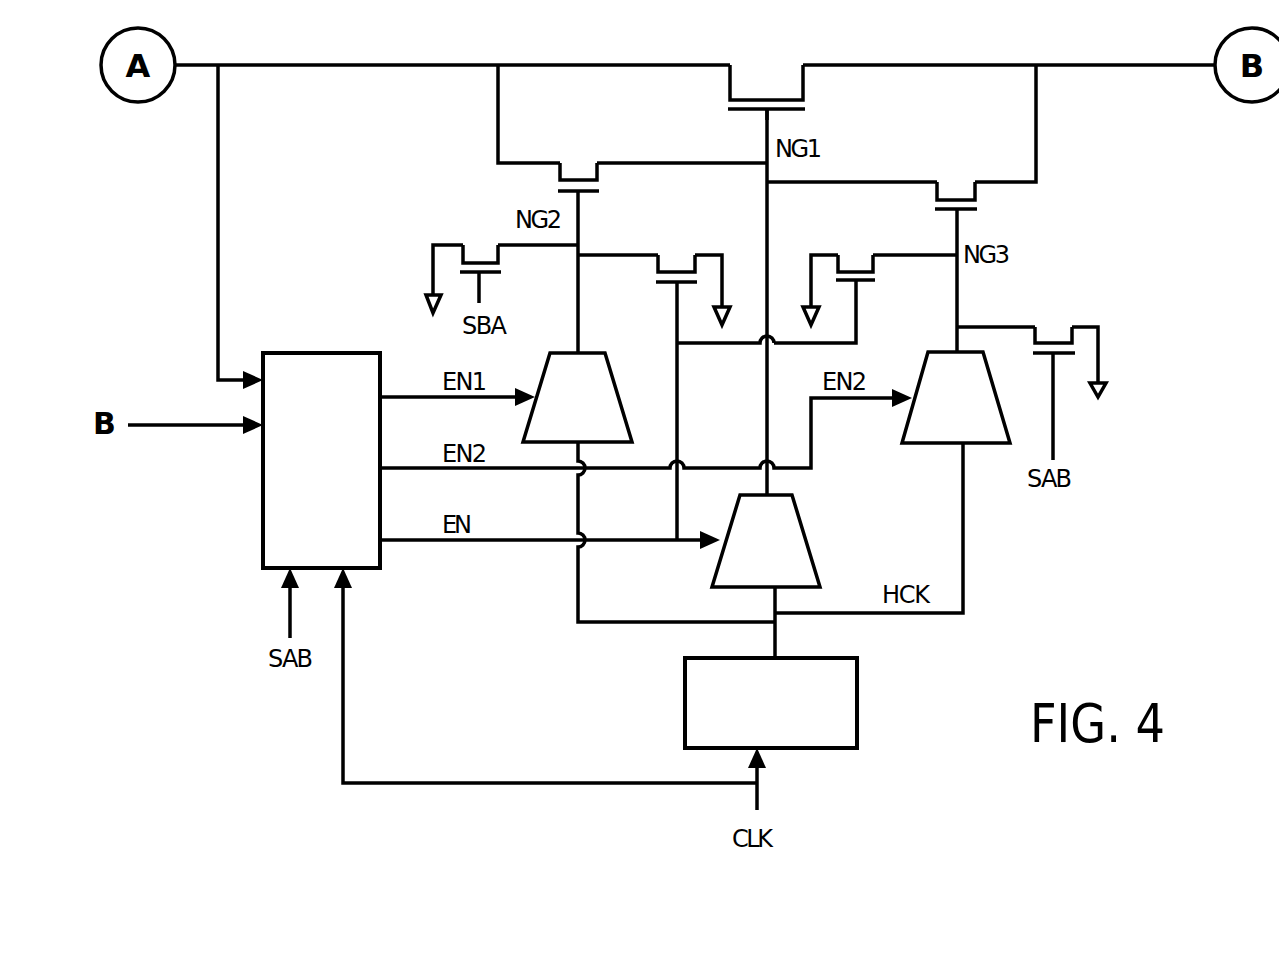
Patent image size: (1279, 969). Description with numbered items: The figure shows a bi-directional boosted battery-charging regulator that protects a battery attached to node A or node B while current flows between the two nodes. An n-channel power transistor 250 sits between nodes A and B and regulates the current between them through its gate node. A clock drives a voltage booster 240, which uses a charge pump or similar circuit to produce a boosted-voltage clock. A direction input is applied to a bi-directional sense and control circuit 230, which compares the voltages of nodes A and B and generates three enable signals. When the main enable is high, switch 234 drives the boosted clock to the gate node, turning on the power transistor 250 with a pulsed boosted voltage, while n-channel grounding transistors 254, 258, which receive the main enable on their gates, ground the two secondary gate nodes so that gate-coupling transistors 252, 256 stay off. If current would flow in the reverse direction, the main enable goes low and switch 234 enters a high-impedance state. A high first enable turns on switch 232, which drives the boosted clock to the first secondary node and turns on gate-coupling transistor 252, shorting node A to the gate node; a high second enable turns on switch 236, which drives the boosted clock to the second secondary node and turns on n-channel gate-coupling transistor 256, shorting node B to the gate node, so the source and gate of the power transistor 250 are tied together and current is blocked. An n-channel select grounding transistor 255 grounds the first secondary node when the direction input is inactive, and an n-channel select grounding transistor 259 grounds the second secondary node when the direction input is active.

The bi-directional sense and control circuit 230 is at (355, 527).
The switch 232 is at (559, 431).
The switch 234 is at (756, 574).
The switch 236 is at (944, 429).
The voltage booster 240 is at (840, 736).
The power transistor 250 is at (758, 98).
The gate-coupling transistor 252 is at (585, 182).
The n-channel grounding transistor 254 is at (688, 272).
The n-channel select grounding transistor 255 is at (486, 264).
The n-channel gate-coupling transistor 256 is at (966, 201).
The n-channel grounding transistor 258 is at (868, 273).
The n-channel select grounding transistor 259 is at (1066, 345).